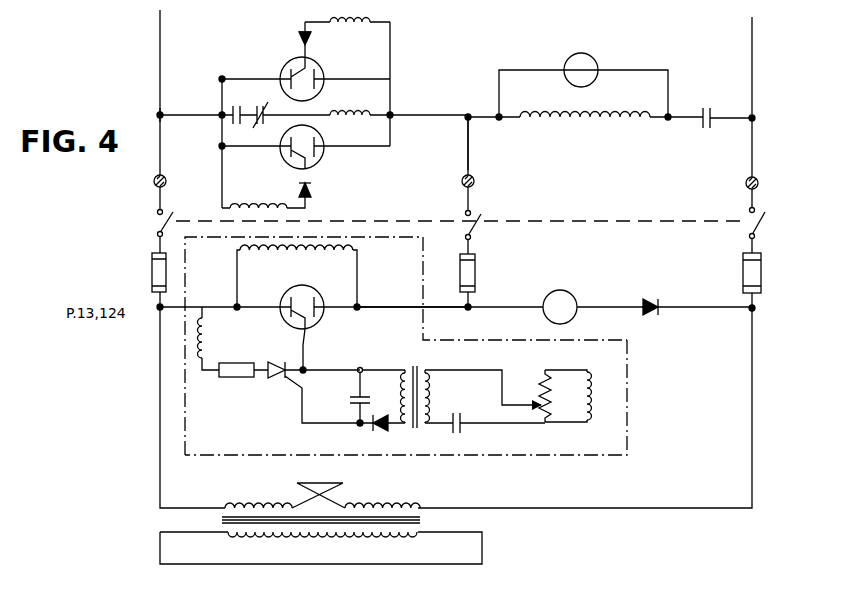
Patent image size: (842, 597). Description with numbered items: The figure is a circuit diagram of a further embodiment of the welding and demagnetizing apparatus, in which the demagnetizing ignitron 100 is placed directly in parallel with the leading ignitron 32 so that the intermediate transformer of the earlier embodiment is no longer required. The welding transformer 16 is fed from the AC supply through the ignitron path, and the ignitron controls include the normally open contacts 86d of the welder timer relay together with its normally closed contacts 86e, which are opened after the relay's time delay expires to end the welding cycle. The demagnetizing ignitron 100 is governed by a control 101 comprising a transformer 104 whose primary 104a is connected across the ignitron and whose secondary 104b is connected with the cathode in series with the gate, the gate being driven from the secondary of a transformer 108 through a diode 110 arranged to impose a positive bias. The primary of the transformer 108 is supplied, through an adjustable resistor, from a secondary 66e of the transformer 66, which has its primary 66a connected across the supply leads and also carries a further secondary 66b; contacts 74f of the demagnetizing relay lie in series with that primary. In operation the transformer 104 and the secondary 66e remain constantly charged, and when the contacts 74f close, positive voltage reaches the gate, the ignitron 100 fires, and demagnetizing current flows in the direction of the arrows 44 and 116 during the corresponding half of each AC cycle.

The normally open contacts 86d is at (178, 103).
The normally closed contacts 86e is at (274, 62).
The leading ignitron 32 is at (322, 166).
The arrow 44 is at (479, 151).
The transformer 16 is at (610, 126).
The transformer 104 is at (236, 245).
The primary 104a is at (312, 258).
The secondary 104b is at (207, 331).
The arrow 116 is at (393, 268).
The ignitron 100 is at (318, 328).
The control 101 is at (633, 380).
The secondary 66e is at (592, 403).
The contacts 74f is at (462, 429).
The diode 110 is at (371, 428).
The transformer 108 is at (415, 432).
The transformer 66 is at (252, 514).
The primary 66a is at (246, 506).
The secondary 66b is at (245, 537).